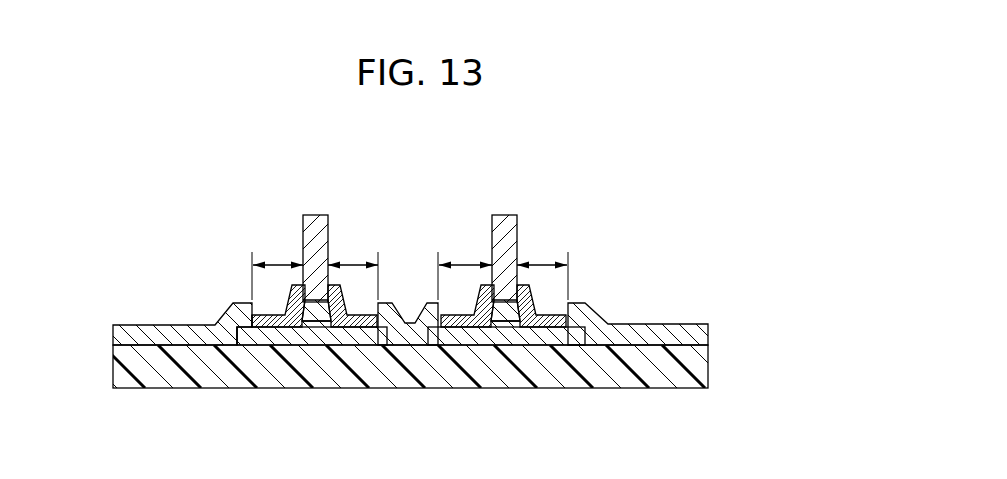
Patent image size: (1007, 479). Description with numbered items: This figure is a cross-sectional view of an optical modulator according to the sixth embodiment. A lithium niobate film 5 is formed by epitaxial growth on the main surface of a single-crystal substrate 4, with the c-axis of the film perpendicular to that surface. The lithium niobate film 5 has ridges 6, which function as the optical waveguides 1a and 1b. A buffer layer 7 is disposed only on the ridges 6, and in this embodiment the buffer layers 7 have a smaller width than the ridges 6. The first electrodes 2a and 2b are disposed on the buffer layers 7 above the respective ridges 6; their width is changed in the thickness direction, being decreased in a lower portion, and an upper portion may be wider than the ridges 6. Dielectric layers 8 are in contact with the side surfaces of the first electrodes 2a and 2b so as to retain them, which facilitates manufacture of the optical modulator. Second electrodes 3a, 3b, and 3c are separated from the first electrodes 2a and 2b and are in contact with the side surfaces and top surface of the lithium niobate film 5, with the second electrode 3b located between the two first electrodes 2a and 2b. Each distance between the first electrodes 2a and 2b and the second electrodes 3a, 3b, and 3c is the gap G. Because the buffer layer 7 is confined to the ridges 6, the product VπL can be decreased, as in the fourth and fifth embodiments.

The optical waveguide 1a is at (316, 318).
The optical waveguide 1b is at (508, 322).
The first electrode 2a is at (317, 215).
The first electrode 2b is at (505, 215).
The second electrode 3a is at (180, 325).
The second electrode 3b is at (408, 322).
The second electrode 3c is at (638, 330).
The single-crystal substrate 4 is at (178, 378).
The lithium niobate film 5 is at (243, 328).
The ridge 6 is at (321, 320).
The buffer layer 7 is at (360, 333).
The dielectric layer 8 is at (291, 327).
The gap G is at (410, 265).